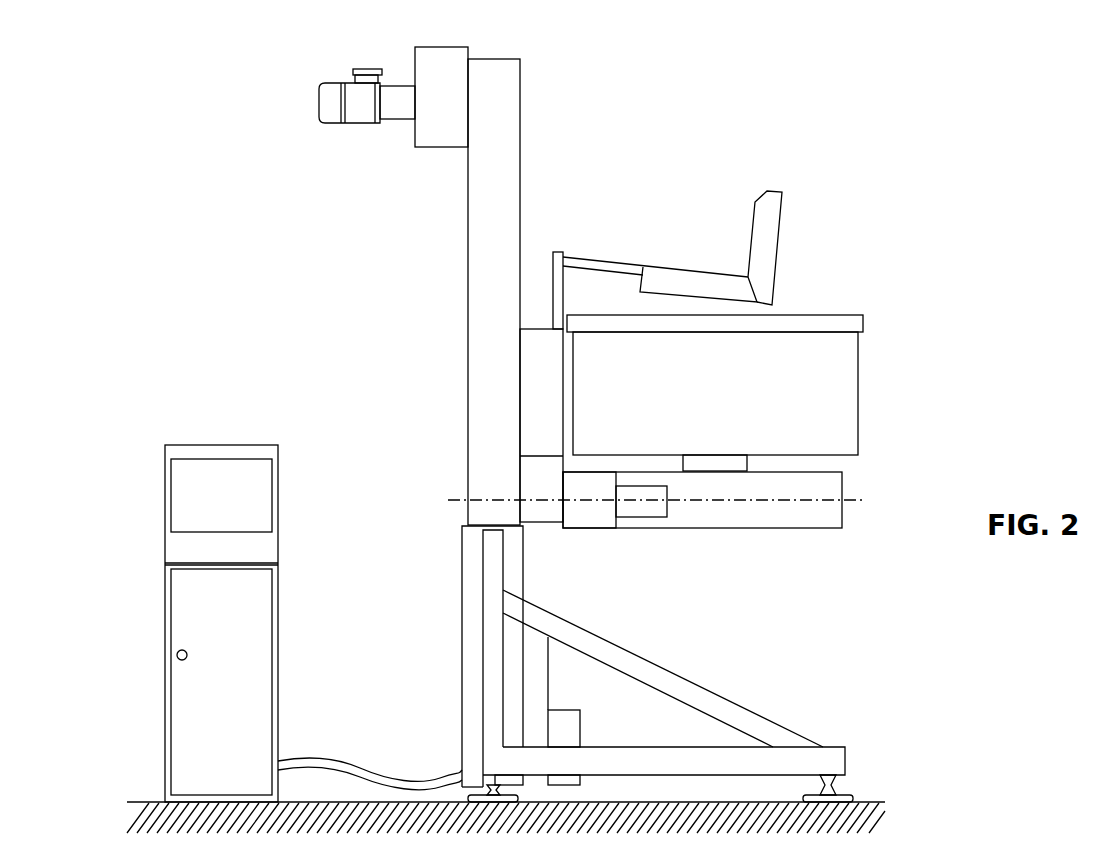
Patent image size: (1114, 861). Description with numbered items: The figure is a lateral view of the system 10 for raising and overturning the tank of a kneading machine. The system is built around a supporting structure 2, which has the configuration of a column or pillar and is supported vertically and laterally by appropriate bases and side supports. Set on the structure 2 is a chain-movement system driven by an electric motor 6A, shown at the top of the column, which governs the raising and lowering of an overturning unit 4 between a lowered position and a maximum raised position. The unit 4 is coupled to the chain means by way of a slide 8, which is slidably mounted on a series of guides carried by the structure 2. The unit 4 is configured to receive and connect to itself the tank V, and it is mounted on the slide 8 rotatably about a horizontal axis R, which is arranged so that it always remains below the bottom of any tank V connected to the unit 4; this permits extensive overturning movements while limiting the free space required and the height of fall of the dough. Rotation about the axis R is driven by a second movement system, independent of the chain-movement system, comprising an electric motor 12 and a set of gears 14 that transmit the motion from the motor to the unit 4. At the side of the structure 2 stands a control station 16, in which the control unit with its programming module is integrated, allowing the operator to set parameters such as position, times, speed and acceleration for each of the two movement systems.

The system 10 is at (256, 218).
The electric motor 6A is at (354, 66).
The supporting structure 2 is at (460, 448).
The control station 16 is at (196, 440).
The slide 8 is at (543, 510).
The tank V is at (862, 413).
The overturning unit 4 is at (663, 538).
The set of gears 14 is at (598, 517).
The electric motor 12 is at (657, 508).
The horizontal axis R is at (453, 502).